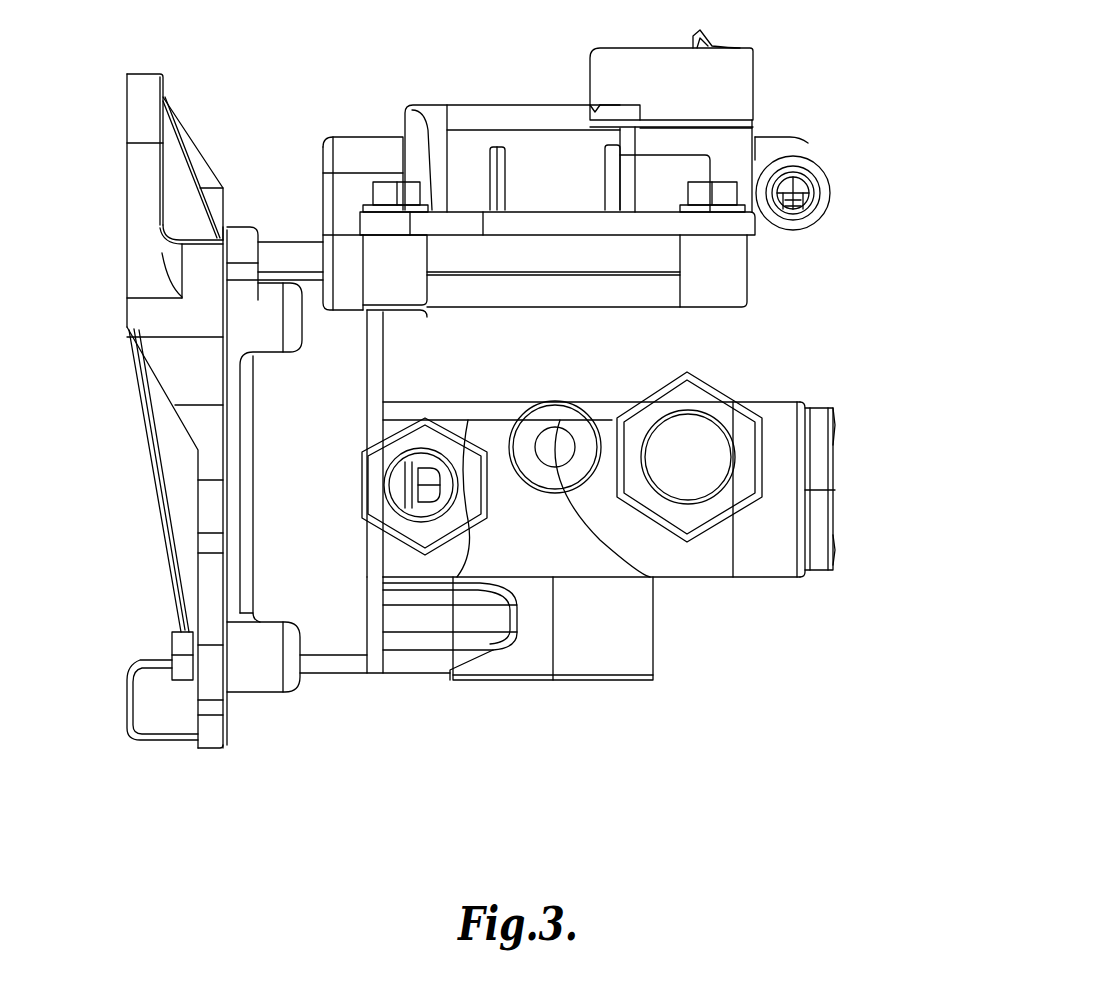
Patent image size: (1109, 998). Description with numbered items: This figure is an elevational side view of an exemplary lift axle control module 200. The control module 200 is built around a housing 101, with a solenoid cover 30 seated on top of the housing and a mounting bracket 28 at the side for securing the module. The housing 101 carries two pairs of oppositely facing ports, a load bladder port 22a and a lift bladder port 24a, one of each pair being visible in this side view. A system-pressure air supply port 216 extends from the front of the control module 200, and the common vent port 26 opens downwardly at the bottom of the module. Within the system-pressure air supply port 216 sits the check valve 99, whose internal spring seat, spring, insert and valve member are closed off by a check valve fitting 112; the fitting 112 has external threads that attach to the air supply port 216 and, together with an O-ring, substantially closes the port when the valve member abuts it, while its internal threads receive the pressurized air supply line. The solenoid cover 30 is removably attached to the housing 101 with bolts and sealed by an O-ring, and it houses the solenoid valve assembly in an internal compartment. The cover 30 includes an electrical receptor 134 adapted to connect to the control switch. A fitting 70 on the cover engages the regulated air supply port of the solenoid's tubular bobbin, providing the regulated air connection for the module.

The lift axle control module 200 is at (866, 314).
The mounting bracket 28 is at (135, 107).
The solenoid cover 30 is at (535, 112).
The electrical receptor 134 is at (743, 72).
The fitting 70 is at (812, 190).
The housing 101 is at (725, 332).
The system-pressure air supply port 216 is at (835, 423).
The check valve fitting 112 is at (827, 448).
The check valve 99 is at (836, 548).
The load bladder port 22a is at (735, 503).
The lift bladder port 24a is at (383, 522).
The common vent port 26 is at (600, 682).